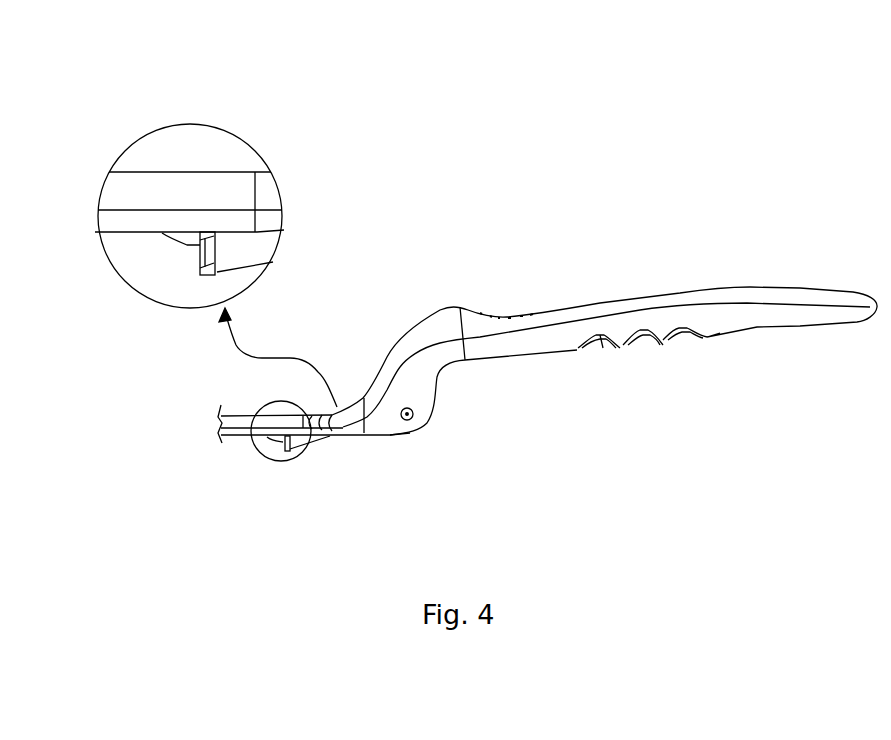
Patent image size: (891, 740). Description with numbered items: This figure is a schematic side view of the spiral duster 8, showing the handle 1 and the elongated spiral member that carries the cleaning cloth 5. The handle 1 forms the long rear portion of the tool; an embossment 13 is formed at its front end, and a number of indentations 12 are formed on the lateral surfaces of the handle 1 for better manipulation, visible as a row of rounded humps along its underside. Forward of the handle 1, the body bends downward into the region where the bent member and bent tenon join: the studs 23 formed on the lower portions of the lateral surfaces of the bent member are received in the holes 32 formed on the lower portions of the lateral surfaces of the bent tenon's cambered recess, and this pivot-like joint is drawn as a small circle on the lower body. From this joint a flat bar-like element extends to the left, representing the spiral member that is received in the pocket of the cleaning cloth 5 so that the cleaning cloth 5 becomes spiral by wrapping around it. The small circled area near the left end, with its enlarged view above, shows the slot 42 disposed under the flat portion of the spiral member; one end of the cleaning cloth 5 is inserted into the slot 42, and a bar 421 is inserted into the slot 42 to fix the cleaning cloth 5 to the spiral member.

The spiral duster 8 is at (500, 117).
The handle 1 is at (715, 295).
The embossment 13 is at (515, 317).
The indentations 12 is at (640, 340).
The studs 23 is at (413, 415).
The holes 32 is at (408, 420).
The cleaning cloth 5 is at (270, 441).
The slot 42 is at (217, 247).
The bar 421 is at (208, 257).